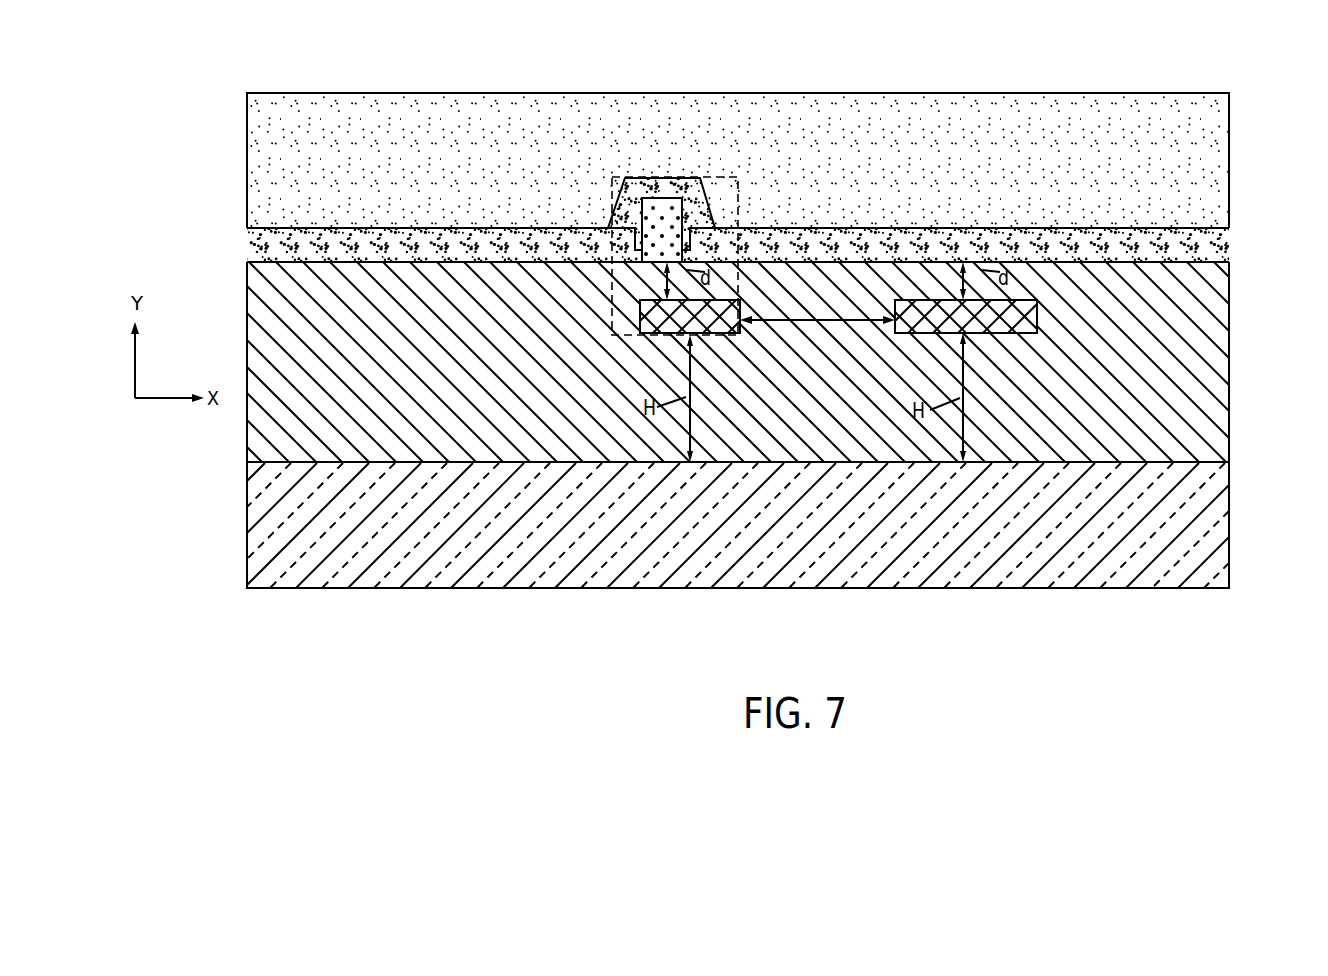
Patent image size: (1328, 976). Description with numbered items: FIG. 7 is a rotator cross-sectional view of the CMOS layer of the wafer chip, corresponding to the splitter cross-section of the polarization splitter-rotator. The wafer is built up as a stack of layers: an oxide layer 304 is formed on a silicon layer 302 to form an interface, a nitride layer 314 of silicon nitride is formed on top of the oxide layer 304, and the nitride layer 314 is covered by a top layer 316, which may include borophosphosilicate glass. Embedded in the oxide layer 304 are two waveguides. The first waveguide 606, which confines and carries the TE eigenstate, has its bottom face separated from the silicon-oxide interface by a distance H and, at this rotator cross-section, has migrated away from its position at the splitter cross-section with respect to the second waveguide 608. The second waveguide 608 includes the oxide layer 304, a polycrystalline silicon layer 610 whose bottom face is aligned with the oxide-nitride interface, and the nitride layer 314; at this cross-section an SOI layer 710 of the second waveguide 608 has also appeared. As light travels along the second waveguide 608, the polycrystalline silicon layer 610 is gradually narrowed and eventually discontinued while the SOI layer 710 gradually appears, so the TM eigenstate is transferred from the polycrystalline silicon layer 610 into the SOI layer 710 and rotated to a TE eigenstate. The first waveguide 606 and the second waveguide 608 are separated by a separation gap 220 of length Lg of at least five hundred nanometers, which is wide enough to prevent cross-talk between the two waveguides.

The top layer 316 is at (1222, 185).
The nitride layer 314 is at (1210, 248).
The oxide layer 304 is at (1222, 375).
The silicon layer 302 is at (1053, 577).
The polycrystalline silicon layer 610 is at (660, 215).
The second waveguide 608 is at (603, 284).
The SOI layer 710 is at (651, 337).
The first waveguide 606 is at (1035, 333).
The separation gap 220 is at (812, 323).